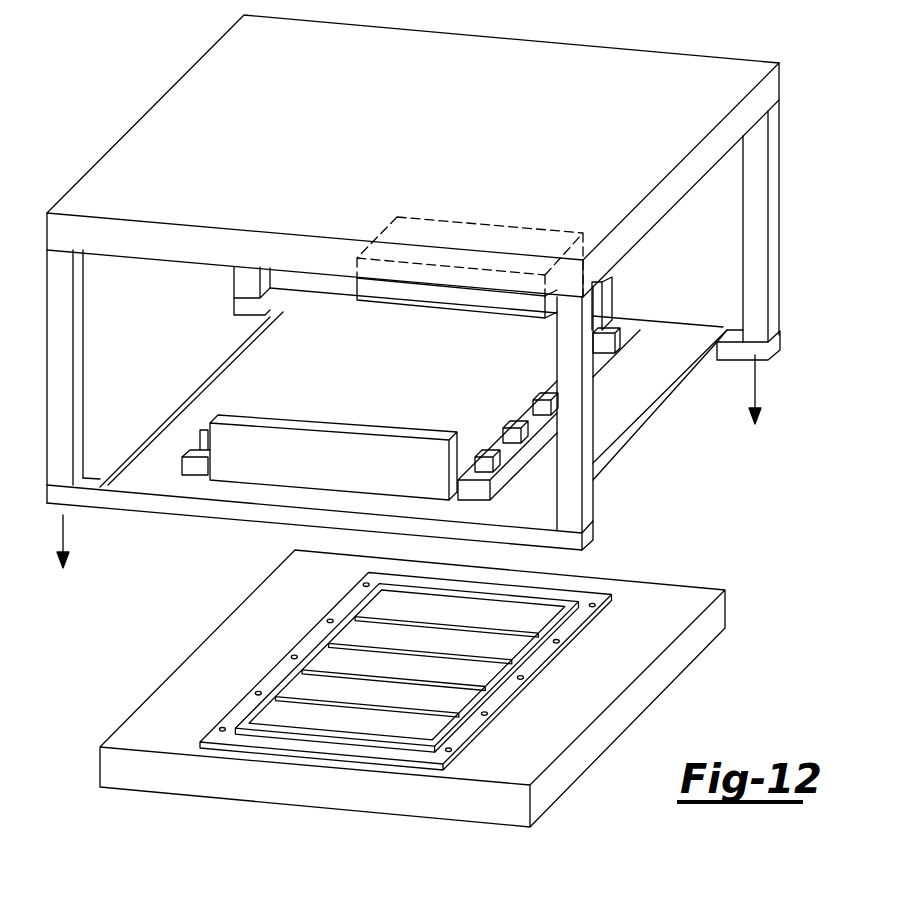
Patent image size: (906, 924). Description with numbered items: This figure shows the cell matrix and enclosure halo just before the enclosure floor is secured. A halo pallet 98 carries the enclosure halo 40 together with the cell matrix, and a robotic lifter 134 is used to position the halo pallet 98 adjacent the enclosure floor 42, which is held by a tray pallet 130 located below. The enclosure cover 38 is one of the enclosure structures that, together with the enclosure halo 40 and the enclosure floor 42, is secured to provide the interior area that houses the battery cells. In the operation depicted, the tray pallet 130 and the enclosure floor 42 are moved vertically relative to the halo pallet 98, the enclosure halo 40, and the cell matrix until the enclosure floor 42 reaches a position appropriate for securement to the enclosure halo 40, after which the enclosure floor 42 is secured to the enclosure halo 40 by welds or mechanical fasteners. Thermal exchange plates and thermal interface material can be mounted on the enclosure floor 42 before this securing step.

The robotic lifter 134 is at (648, 72).
The halo pallet 98 is at (640, 425).
The enclosure cover 38 is at (265, 385).
The enclosure halo 40 is at (257, 457).
The tray pallet 130 is at (688, 650).
The enclosure floor 42 is at (512, 692).